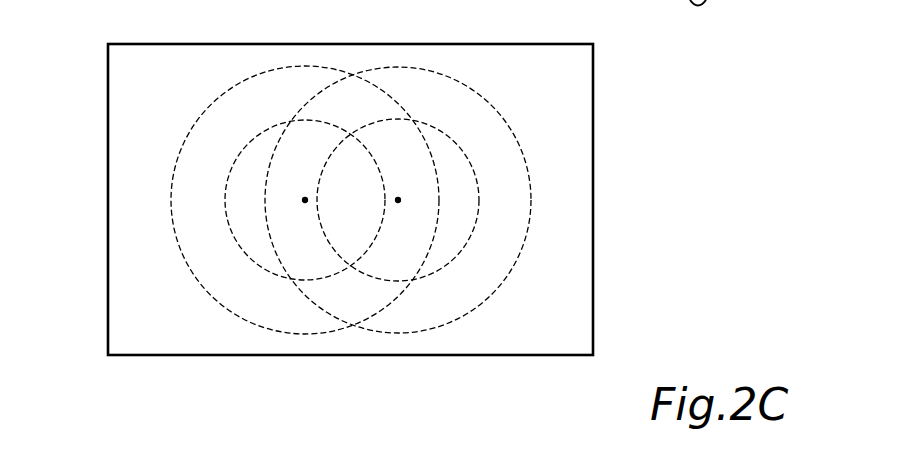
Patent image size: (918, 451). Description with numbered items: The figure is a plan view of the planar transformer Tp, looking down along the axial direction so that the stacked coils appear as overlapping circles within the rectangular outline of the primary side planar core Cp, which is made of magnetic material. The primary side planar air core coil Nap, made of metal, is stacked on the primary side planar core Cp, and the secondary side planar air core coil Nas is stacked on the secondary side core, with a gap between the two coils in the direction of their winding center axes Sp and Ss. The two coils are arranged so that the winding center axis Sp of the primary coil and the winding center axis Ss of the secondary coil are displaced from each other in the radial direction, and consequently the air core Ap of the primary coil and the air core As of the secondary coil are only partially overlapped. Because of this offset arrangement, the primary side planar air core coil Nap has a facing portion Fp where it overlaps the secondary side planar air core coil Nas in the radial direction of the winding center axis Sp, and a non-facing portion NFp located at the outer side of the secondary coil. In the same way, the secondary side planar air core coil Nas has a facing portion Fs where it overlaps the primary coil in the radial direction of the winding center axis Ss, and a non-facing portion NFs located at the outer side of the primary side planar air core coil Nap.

The primary side planar core Cp is at (126, 84).
The facing portion Fp is at (245, 171).
The facing portion Fs is at (465, 205).
The non-facing portion NFp is at (170, 196).
The non-facing portion NFs is at (535, 196).
The primary side planar air core coil Nap is at (238, 202).
The secondary side planar air core coil Nas is at (465, 205).
The air core Ap is at (225, 227).
The air core As is at (463, 218).
The winding center axis Sp is at (305, 200).
The winding center axis Ss is at (398, 200).
The planar transformer Tp is at (627, 98).